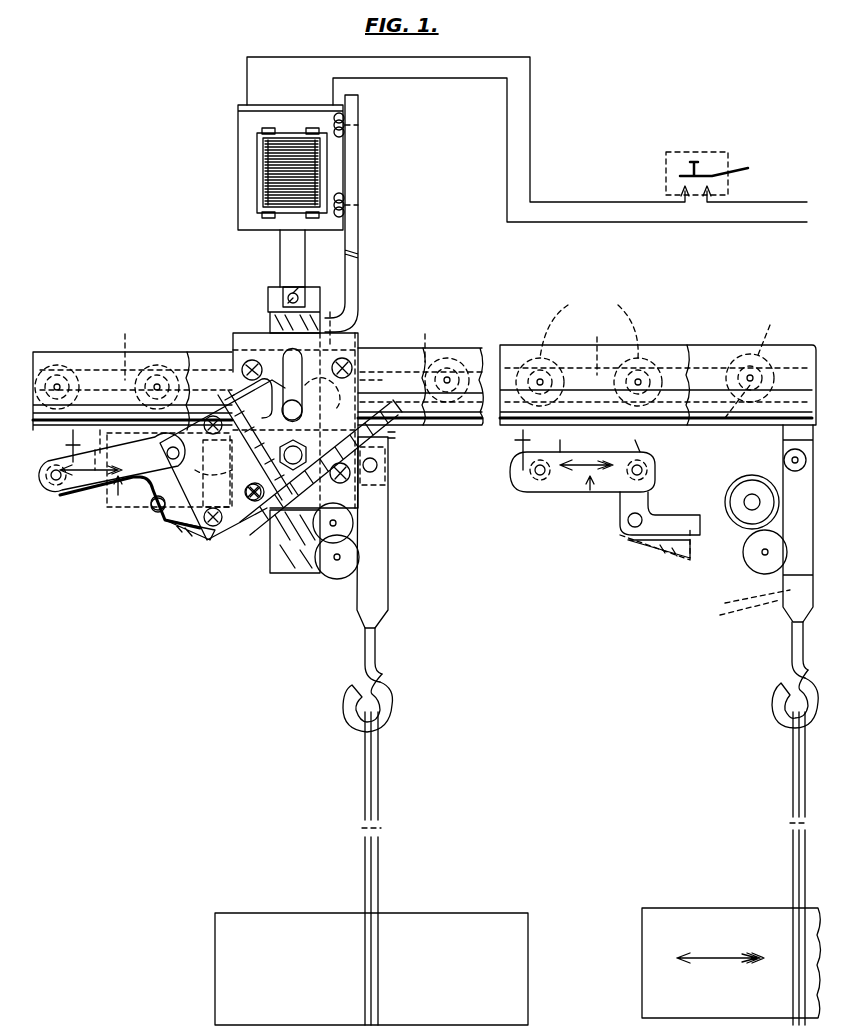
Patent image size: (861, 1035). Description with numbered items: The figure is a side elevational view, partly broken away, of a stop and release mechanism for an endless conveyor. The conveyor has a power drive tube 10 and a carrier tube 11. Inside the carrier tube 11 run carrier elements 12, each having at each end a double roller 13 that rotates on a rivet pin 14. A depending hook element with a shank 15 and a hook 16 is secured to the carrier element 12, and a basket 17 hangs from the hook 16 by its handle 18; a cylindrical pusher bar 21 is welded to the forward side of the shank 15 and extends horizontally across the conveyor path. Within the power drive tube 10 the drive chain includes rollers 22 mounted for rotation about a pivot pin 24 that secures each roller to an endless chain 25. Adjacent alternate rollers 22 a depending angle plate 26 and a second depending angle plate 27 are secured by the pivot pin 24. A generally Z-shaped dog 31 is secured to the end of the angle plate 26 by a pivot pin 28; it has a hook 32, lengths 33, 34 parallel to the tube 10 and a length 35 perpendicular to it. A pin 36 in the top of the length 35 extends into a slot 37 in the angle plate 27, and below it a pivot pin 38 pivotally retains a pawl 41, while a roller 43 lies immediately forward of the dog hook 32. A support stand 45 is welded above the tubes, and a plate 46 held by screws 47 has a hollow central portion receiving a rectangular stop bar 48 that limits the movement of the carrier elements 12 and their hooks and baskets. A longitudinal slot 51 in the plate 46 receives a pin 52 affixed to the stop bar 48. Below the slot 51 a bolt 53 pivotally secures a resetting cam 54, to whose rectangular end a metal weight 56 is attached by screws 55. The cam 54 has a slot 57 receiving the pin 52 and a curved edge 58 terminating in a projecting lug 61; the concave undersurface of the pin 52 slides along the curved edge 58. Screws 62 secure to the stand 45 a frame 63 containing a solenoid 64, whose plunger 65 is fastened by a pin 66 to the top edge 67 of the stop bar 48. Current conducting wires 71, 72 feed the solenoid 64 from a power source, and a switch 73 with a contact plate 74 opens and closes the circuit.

The power drive tube 10 is at (92, 345).
The carrier tube 11 is at (396, 340).
The carrier element 12 is at (390, 445).
The double roller 13 is at (553, 327).
The rivet pin 14 is at (555, 409).
The shank 15 is at (390, 605).
The hook 16 is at (395, 698).
The basket 17 is at (275, 920).
The handle 18 is at (380, 840).
The cylindrical pusher bar 21 is at (336, 580).
The roller 22 is at (455, 358).
The pivot pin 24 is at (403, 382).
The endless chain 25 is at (364, 345).
The depending angle plate 26 is at (298, 449).
The second depending angle plate 27 is at (150, 437).
The pivot pin 28 is at (56, 480).
The Z-shaped dog 31 is at (336, 490).
The hook 32 is at (345, 518).
The length 33 is at (200, 483).
The length 34 is at (92, 480).
The length 35 is at (150, 510).
The pin 36 is at (176, 450).
The slot 37 is at (98, 503).
The pivot pin 38 is at (157, 512).
The pawl 41 is at (190, 535).
The roller 43 is at (750, 475).
The support stand 45 is at (358, 170).
The plate 46 is at (233, 352).
The screw 47 is at (393, 480).
The stop bar 48 is at (272, 570).
The longitudinal slot 51 is at (297, 375).
The pin 52 is at (303, 410).
The bolt 53 is at (300, 440).
The resetting cam 54 is at (215, 552).
The screw 55 is at (220, 420).
The metal weight 56 is at (255, 532).
The slot 57 is at (252, 398).
The curved edge 58 is at (328, 394).
The projecting lug 61 is at (398, 434).
The screw 62 is at (350, 206).
The frame 63 is at (290, 110).
The solenoid 64 is at (265, 168).
The plunger 65 is at (280, 241).
The pin 66 is at (292, 290).
The top edge 67 is at (268, 297).
The current conducting wire 71 is at (530, 130).
The current conducting wire 72 is at (506, 178).
The switch 73 is at (712, 150).
The contact plate 74 is at (728, 175).